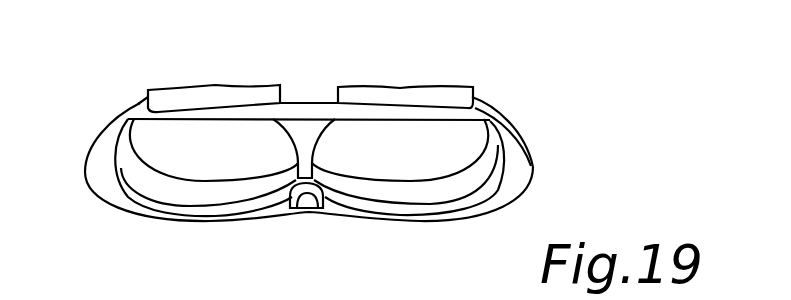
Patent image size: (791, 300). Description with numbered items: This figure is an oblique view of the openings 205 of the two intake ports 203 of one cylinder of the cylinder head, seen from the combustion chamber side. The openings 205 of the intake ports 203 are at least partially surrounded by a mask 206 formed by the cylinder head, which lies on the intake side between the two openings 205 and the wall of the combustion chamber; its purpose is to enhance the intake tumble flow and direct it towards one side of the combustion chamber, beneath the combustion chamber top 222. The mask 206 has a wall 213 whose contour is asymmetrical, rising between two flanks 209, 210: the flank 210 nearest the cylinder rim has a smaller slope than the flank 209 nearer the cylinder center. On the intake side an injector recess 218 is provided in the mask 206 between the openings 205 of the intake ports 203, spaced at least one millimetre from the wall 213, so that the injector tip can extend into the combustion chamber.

The intake port 203 is at (180, 97).
The combustion chamber top 222 is at (303, 132).
The opening 205 is at (228, 160).
The flank 210 is at (505, 177).
The wall 213 is at (183, 213).
The mask 206 is at (267, 210).
The injector recess 218 is at (314, 209).
The flank 209 is at (312, 172).